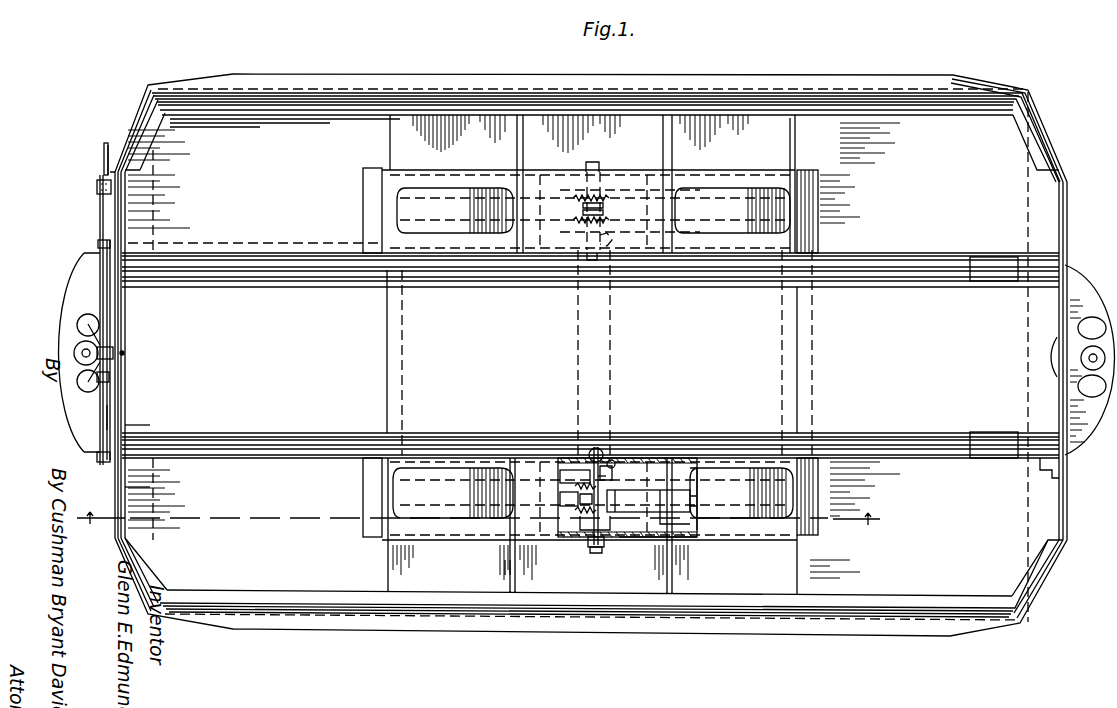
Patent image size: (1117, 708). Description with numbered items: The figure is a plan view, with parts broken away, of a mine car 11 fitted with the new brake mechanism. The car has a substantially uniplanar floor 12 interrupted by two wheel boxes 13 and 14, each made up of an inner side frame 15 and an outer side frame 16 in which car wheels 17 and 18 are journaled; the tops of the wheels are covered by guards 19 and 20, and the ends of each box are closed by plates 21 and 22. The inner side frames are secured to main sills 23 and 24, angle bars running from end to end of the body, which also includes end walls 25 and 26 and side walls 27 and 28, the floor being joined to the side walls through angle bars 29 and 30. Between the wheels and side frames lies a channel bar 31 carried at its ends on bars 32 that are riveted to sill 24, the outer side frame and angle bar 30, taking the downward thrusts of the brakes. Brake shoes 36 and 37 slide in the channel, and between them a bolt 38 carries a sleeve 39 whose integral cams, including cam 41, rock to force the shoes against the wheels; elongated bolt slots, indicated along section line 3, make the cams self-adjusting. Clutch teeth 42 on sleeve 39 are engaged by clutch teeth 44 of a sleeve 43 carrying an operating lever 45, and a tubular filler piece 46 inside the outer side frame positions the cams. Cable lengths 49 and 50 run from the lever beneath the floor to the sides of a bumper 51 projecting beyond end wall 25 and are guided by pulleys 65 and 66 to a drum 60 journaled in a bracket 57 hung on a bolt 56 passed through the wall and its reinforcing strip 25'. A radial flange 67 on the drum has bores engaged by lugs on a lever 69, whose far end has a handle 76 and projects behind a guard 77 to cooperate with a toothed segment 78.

The section line 3- 3 is at (486, 511).
The mine car 11 is at (348, 73).
The floor 12 is at (590, 357).
The wheel box 13 is at (805, 168).
The wheel box 14 is at (697, 450).
The inner side frame 15 is at (653, 462).
The outer side frame 16 is at (627, 540).
The car wheel 17 is at (540, 562).
The car wheel 18 is at (687, 478).
The guard 19 is at (448, 468).
The guard 20 is at (742, 468).
The plate 21 is at (365, 490).
The plate 22 is at (805, 504).
The main sill 23 is at (294, 283).
The main sill 24 is at (287, 432).
The end wall 25 is at (156, 413).
The reinforcing strip 25' is at (116, 485).
The end wall 26 is at (1057, 299).
The side wall 27 is at (834, 100).
The side wall 28 is at (845, 617).
The angle bar 29 is at (937, 113).
The angle bar 30 is at (912, 596).
The channel bar 31 is at (680, 526).
The bar 32 is at (508, 569).
The brake shoe 36 is at (574, 499).
The brake shoe 37 is at (652, 501).
The bolt 38 is at (593, 448).
The sleeve 39 is at (606, 477).
The cam 41 is at (583, 507).
The clutch teeth 42 is at (603, 548).
The sleeve 43 is at (613, 466).
The clutch teeth 44 is at (573, 479).
The operating lever 45 is at (614, 461).
The tubular filler piece 46 is at (584, 540).
The cable length 49 is at (278, 242).
The cable length 50 is at (106, 418).
The bumper 51 is at (73, 299).
The bolt 56 is at (124, 353).
The bracket 57 is at (74, 357).
The drum 60 is at (90, 341).
The pulley 65 is at (98, 244).
The pulley 66 is at (98, 457).
The radial flange 67 is at (116, 385).
The lever 69 is at (101, 213).
The handle 76 is at (104, 157).
The guard 77 is at (97, 191).
The toothed segment 78 is at (107, 172).